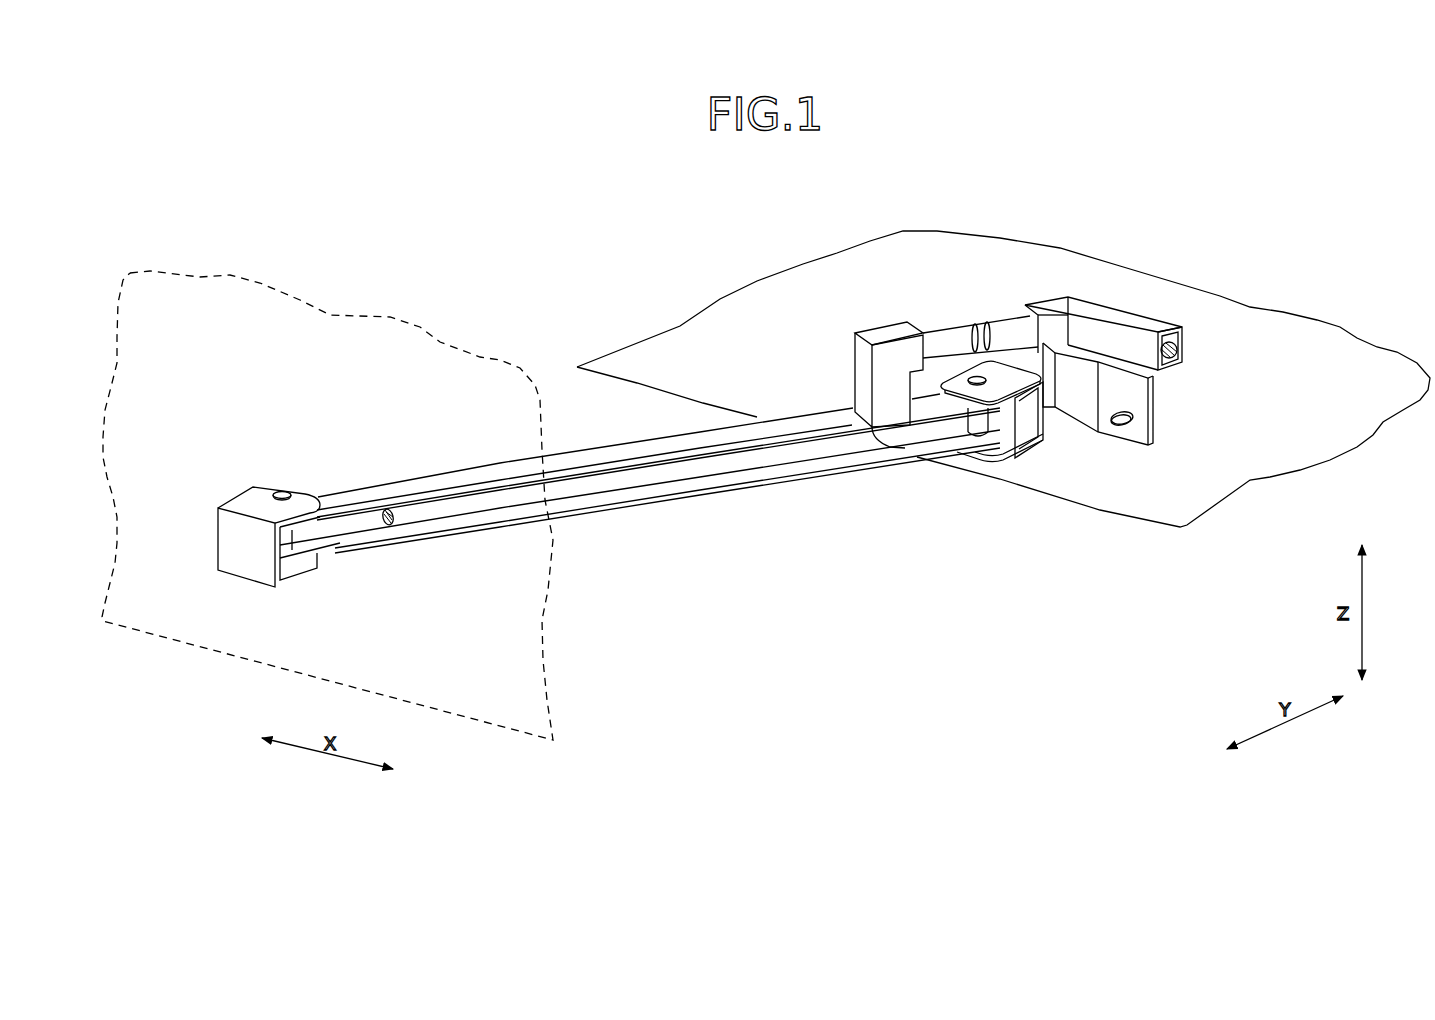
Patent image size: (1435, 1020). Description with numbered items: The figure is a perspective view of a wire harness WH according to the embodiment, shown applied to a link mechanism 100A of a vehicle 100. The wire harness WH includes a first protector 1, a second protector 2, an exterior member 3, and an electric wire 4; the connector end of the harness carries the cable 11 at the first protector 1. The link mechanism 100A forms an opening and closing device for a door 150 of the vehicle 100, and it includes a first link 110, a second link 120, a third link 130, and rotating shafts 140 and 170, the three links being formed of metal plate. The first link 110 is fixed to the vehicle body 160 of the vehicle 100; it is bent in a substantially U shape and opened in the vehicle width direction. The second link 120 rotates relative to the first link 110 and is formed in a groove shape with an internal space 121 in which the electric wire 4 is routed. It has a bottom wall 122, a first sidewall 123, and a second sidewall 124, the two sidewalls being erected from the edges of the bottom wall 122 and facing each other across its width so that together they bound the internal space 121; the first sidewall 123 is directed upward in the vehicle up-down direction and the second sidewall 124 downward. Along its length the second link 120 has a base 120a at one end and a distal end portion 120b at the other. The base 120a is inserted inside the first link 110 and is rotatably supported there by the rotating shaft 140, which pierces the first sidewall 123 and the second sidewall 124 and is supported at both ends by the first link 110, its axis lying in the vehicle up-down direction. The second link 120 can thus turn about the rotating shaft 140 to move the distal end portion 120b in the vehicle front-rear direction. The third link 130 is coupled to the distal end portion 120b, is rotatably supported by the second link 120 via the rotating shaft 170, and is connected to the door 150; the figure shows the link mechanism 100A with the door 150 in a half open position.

The vehicle 100 is at (1127, 222).
The first protector 1 is at (1103, 387).
The cable 11 is at (1132, 309).
The vehicle body 160 is at (1208, 318).
The wire harness WH is at (922, 306).
The rotating shaft 140 is at (975, 372).
The exterior member 3 is at (990, 326).
The second protector 2 is at (868, 332).
The door 150 is at (390, 317).
The rotating shaft 170 is at (283, 489).
The first sidewall 123 is at (396, 481).
The third link 130 is at (265, 541).
The distal end portion 120b is at (330, 548).
The bottom wall 122 is at (356, 528).
The second sidewall 124 is at (420, 546).
The internal space 121 is at (698, 491).
The electric wire 4 is at (752, 457).
The second link 120 is at (640, 515).
The base 120a is at (958, 437).
The link mechanism 100A is at (989, 410).
The first link 110 is at (1040, 449).